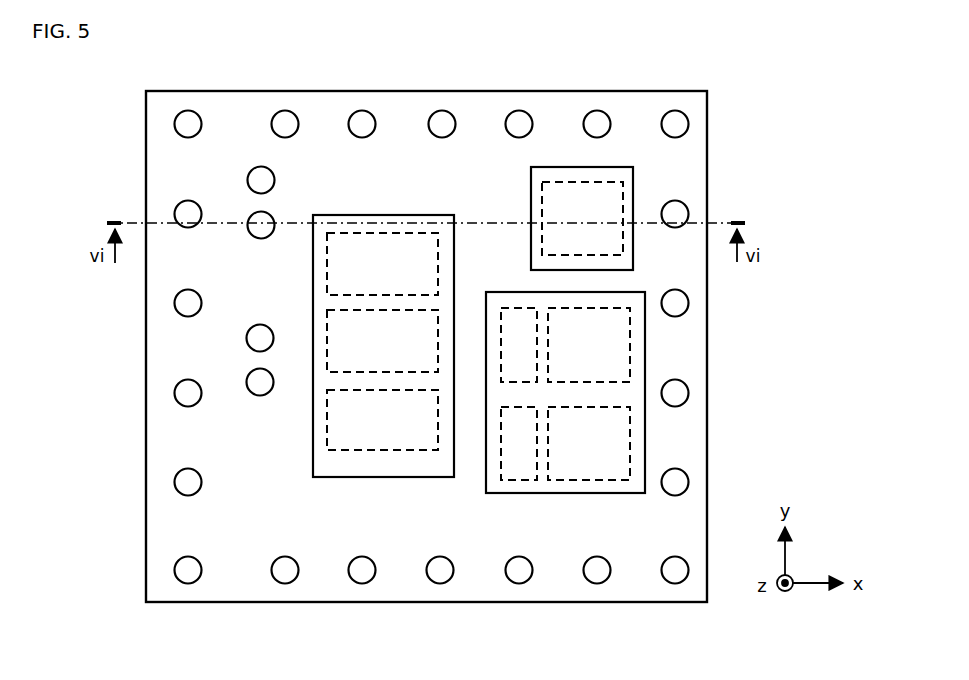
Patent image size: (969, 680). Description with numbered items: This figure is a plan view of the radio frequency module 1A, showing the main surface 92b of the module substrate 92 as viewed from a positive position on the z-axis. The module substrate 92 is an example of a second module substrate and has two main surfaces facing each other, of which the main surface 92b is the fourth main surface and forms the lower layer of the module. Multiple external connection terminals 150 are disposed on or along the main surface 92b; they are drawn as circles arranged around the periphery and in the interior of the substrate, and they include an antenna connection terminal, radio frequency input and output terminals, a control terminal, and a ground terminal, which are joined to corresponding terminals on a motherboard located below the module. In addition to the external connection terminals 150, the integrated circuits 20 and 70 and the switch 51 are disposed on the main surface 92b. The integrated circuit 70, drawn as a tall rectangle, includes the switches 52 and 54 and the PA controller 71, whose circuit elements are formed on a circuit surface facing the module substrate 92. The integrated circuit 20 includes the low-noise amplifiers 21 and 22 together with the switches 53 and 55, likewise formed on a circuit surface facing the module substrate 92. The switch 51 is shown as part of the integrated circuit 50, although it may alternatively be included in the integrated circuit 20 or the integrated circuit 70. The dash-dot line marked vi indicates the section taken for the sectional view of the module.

The radio frequency module 1A is at (758, 62).
The external connection terminals 150 is at (198, 113).
The module substrate 92 is at (322, 91).
The main surface 92b is at (658, 100).
The integrated circuit 50 is at (562, 204).
The switch 51 is at (542, 216).
The integrated circuit 70 is at (367, 331).
The switch 52 is at (327, 282).
The switch 54 is at (327, 345).
The PA controller 71 is at (327, 437).
The integrated circuit 20 is at (568, 414).
The switch 53 is at (501, 335).
The switch 55 is at (501, 430).
The low-noise amplifier 21 is at (630, 357).
The low-noise amplifier 22 is at (630, 455).